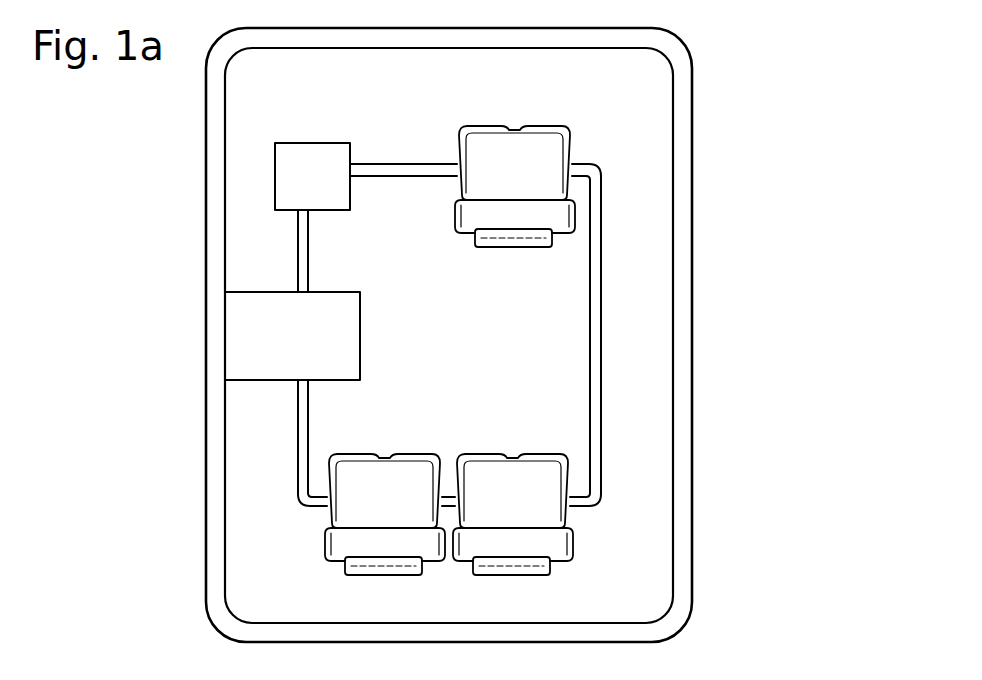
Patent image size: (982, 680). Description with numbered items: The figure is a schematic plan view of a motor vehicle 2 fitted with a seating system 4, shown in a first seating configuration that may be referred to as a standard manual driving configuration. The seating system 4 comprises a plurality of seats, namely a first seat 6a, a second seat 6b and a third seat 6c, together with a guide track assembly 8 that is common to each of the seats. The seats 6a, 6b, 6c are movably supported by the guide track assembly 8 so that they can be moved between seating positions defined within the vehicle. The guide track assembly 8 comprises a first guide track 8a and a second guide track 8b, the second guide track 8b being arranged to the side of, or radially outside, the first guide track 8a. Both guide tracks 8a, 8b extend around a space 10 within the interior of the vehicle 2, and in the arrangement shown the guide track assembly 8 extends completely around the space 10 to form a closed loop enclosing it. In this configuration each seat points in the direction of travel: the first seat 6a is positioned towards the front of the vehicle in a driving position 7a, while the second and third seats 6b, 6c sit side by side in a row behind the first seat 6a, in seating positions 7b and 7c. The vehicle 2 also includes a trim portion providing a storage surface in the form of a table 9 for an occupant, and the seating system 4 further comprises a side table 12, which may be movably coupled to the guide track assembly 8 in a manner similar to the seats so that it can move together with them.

The motor vehicle 2 is at (730, 69).
The seating system 4 is at (648, 205).
The first seat 6a is at (504, 167).
The second seat 6b is at (300, 485).
The third seat 6c is at (597, 485).
The driving position 7a is at (537, 144).
The seating position 7b is at (384, 462).
The seating position 7c is at (512, 462).
The guide track assembly 8 is at (526, 335).
The first guide track 8a is at (601, 347).
The second guide track 8b is at (590, 278).
The table 9 is at (237, 320).
The space 10 is at (464, 332).
The side table 12 is at (318, 143).